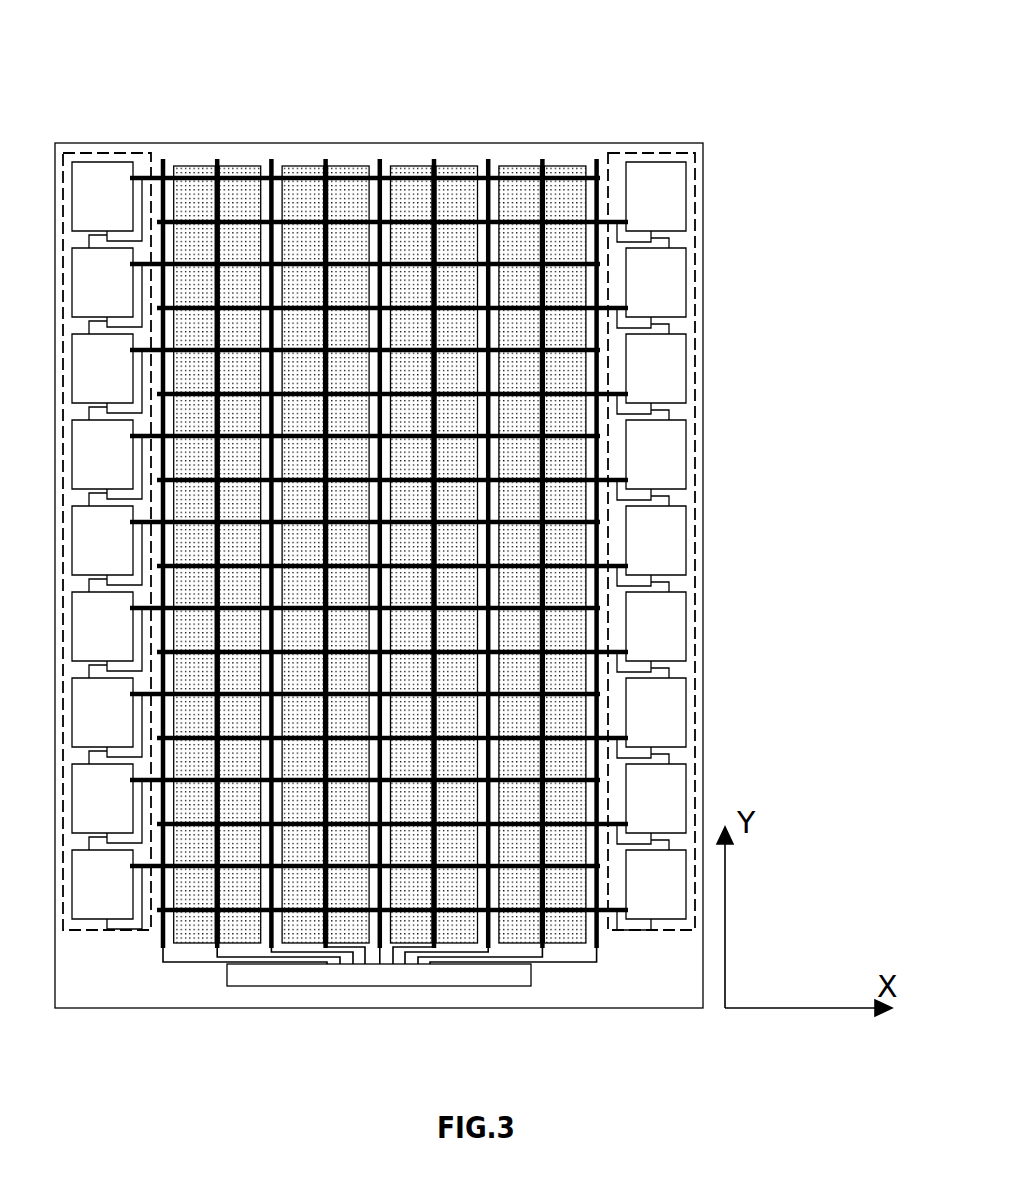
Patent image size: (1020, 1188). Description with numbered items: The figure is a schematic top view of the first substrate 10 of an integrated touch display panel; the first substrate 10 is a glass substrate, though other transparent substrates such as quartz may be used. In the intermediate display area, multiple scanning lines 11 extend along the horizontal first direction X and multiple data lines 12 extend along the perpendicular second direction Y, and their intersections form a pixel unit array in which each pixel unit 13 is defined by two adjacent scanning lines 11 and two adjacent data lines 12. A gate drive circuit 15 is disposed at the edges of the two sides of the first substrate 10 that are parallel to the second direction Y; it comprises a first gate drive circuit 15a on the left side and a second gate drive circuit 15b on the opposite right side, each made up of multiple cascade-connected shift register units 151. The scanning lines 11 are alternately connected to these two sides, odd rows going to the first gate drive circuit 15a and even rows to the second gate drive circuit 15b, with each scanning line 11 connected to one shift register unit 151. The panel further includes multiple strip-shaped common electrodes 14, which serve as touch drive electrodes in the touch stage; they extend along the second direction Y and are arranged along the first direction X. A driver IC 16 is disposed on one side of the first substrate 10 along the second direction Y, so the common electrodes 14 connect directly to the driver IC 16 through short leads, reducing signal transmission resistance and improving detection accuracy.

The first substrate 10 is at (703, 543).
The scanning lines 11 is at (245, 173).
The data lines 12 is at (325, 170).
The pixel units 13 is at (402, 197).
The strip-shaped common electrodes 14 is at (509, 170).
The gate drive circuit 15 is at (436, 472).
The first gate drive circuit 15a is at (108, 153).
The second gate drive circuit 15b is at (710, 472).
The shift register unit 151 is at (668, 196).
The driver IC 16 is at (495, 977).